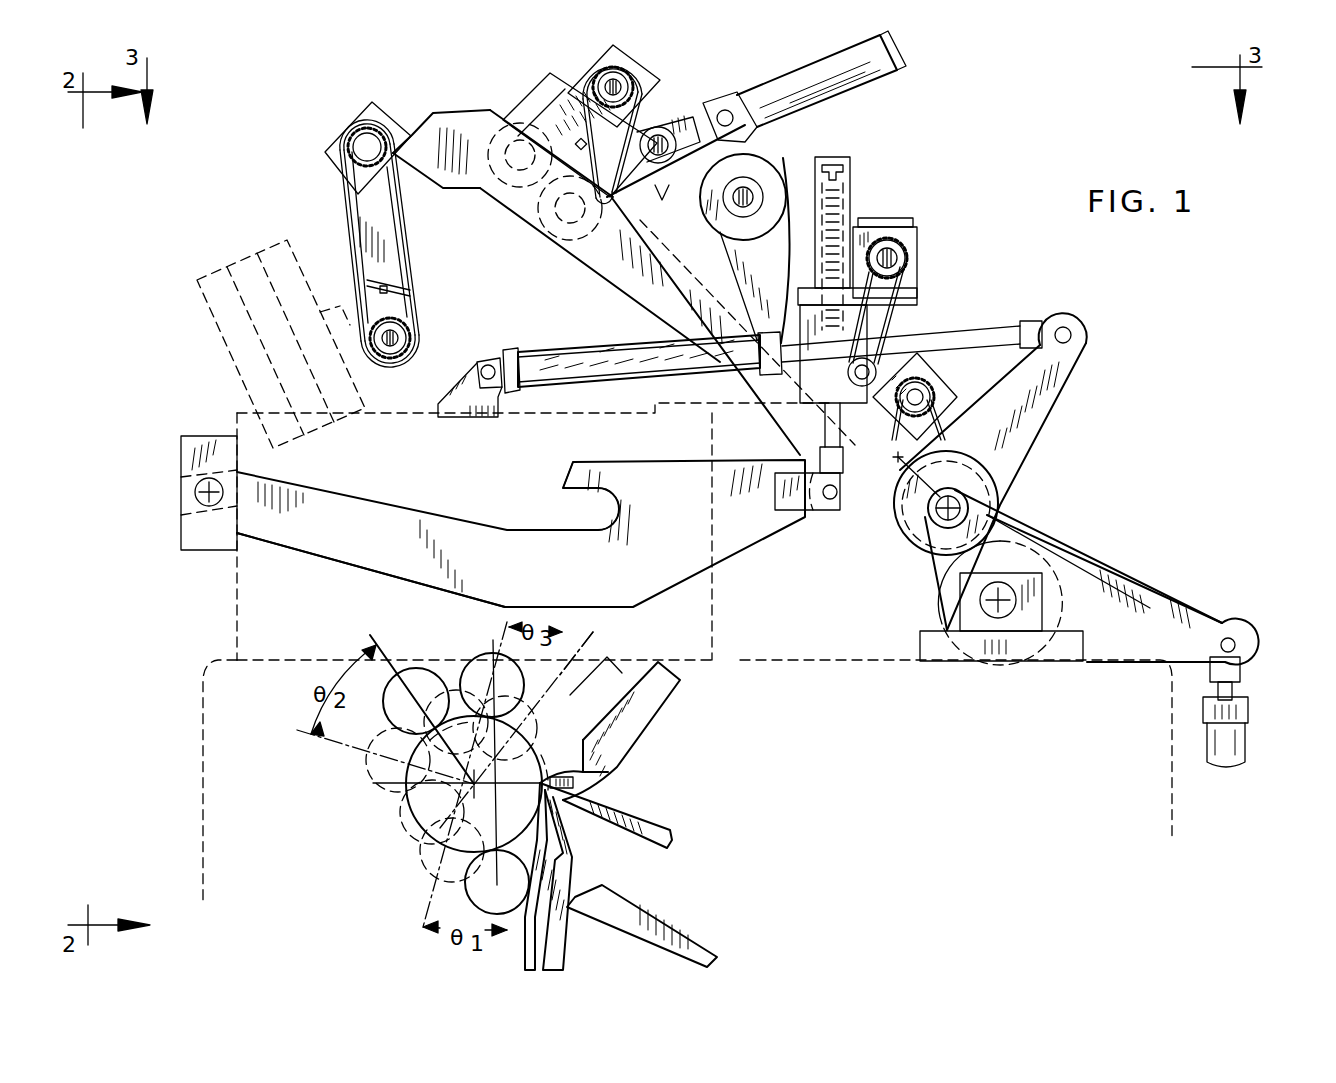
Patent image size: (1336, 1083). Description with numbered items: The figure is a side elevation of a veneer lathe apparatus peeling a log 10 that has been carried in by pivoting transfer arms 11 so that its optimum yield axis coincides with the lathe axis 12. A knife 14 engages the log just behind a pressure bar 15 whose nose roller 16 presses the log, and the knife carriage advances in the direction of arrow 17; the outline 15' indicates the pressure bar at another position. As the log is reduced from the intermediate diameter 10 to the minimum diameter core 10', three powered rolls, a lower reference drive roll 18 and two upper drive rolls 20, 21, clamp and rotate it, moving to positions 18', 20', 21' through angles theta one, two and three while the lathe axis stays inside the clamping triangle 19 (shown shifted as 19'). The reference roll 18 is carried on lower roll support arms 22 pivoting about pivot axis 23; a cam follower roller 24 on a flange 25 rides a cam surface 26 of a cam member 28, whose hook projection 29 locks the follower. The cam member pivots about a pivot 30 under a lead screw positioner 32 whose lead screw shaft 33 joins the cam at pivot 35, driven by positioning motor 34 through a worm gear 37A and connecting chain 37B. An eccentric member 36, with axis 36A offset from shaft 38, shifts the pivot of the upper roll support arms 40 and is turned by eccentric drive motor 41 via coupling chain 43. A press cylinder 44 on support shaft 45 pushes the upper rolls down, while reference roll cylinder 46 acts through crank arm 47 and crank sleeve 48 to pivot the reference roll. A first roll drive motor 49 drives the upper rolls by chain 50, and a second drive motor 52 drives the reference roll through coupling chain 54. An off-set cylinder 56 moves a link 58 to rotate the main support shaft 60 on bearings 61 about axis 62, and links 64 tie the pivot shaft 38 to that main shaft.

The log 10 is at (495, 782).
The minimum diameter log 10' is at (505, 756).
The pivoting transfer arms 11 is at (197, 283).
The lathe axis 12 is at (400, 783).
The knife 14 is at (610, 783).
The pressure bar 15 is at (635, 731).
The blade alternate position 15' is at (591, 655).
The nose roller 16 is at (542, 786).
The arrow 17 is at (648, 808).
The lower reference drive roll 18 is at (449, 601).
The roll position 18' is at (425, 850).
The clamping triangle 19 is at (454, 692).
The roller alternate position 19' is at (410, 812).
The upper drive roll 20 is at (461, 432).
The roll position 20' is at (385, 751).
The upper drive roll 21 is at (527, 530).
The roll position 21' is at (517, 707).
The lower roll support arms 22 is at (632, 301).
The pivot axis 23 is at (966, 500).
The cam follower roller 24 is at (762, 188).
The flange 25 is at (805, 300).
The cam surface 26 is at (506, 528).
The cam member 28 is at (586, 582).
The hook projection 29 is at (571, 476).
The pivot 30 is at (197, 503).
The lead screw positioner 32 is at (851, 183).
The lead screw shaft 33 is at (845, 421).
The positioning motor 34 is at (917, 242).
The pivot 35 is at (820, 510).
The eccentric member 36 is at (985, 486).
The axis of eccentric 36A is at (897, 473).
The worm gear 37A is at (944, 332).
The connecting chain 37B is at (897, 304).
The shaft 38 is at (933, 517).
The upper roll support arms 40 is at (742, 262).
The eccentric drive motor 41 is at (928, 380).
The coupling chain 43 is at (942, 395).
The press cylinder 44 is at (798, 68).
The support shaft 45 is at (715, 198).
The reference roll cylinder 46 is at (541, 352).
The crank arm 47 is at (1062, 386).
The crank sleeve 48 is at (975, 463).
The first roll drive motor 49 is at (601, 55).
The chain 50 is at (521, 97).
The second drive motor 52 is at (345, 143).
The coupling chain 54 is at (358, 265).
The off-set cylinder 56 is at (1252, 740).
The link 58 is at (1170, 600).
The main support shaft 60 is at (1082, 572).
The bearings 61 is at (980, 600).
The axis 62 is at (1033, 545).
The links 64 is at (1008, 518).